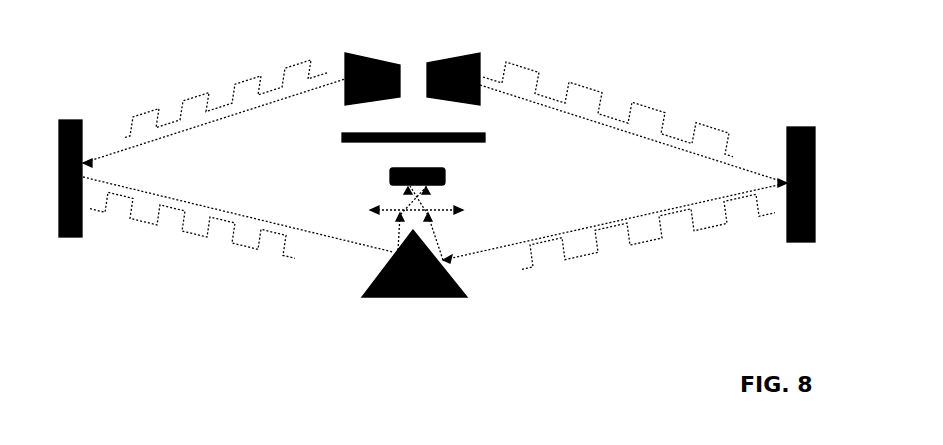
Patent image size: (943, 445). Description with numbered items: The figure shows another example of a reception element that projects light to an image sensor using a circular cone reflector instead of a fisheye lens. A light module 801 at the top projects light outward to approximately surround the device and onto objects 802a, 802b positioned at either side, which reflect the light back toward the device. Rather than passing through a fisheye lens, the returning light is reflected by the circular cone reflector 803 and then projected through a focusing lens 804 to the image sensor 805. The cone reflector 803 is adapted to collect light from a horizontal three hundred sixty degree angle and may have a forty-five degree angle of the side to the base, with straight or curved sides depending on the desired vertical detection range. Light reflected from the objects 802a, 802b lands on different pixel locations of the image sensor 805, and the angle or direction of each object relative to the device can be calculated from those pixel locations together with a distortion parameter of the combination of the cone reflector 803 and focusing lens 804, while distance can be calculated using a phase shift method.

The light module 801 is at (412, 59).
The object 802a is at (62, 160).
The object 802b is at (806, 164).
The circular cone reflector 803 is at (373, 297).
The focusing lens 804 is at (442, 210).
The image sensor 805 is at (445, 173).